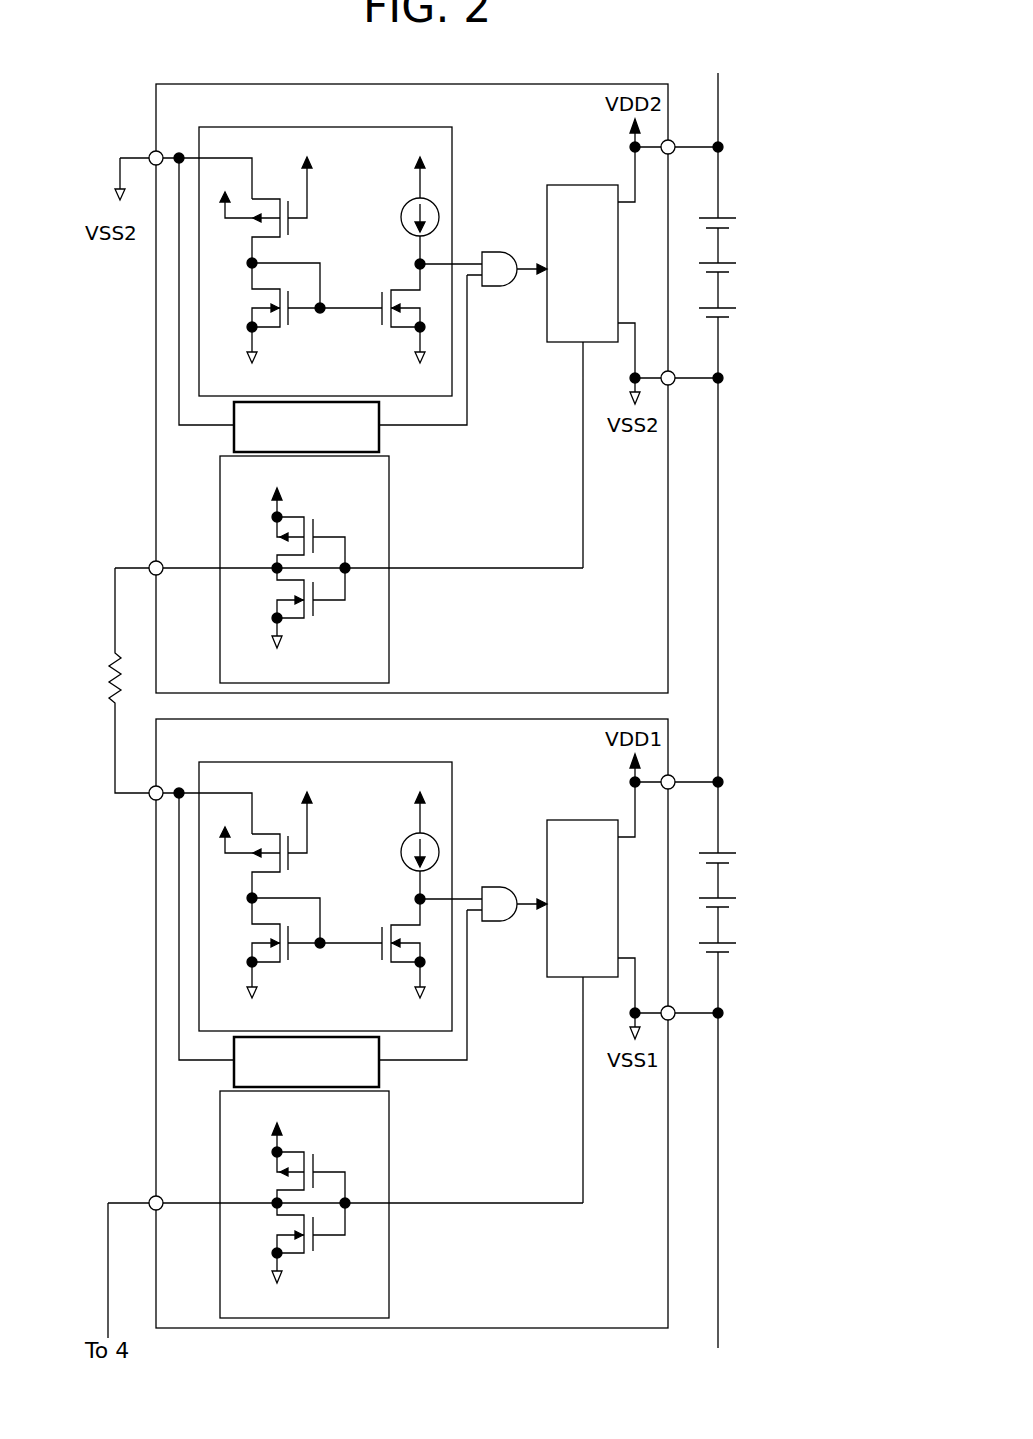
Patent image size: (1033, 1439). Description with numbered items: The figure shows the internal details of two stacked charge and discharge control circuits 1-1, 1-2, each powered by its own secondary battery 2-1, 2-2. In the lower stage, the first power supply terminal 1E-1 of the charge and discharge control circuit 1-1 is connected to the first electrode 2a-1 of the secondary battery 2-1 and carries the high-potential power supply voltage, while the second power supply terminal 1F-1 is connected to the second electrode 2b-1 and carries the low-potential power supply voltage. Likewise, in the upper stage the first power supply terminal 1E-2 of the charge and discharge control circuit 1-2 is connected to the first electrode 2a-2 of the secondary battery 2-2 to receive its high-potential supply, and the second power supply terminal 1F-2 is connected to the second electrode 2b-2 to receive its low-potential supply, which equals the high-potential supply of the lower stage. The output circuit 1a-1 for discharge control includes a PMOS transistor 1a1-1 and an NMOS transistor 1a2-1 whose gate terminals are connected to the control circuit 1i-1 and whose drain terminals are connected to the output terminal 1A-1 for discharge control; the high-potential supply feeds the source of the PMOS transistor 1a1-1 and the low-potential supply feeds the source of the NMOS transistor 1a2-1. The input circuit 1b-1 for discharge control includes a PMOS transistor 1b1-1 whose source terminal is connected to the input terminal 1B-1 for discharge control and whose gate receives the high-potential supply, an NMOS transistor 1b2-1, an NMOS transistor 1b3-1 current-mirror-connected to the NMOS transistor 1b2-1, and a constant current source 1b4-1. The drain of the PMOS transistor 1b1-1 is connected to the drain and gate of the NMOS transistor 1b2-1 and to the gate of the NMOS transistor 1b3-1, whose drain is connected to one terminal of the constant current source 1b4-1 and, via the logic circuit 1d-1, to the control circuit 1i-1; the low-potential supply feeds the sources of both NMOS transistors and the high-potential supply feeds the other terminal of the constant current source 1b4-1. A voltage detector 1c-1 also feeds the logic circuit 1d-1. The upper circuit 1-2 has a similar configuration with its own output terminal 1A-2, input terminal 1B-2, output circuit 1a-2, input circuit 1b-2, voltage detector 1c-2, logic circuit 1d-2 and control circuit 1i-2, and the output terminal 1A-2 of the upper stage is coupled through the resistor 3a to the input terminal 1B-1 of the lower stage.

The charge and discharge control circuit 1-1 is at (156, 985).
The charge and discharge control circuit 1-2 is at (156, 350).
The output terminal for discharge control 1A-1 is at (151, 1199).
The output terminal for discharge control 1A-2 is at (151, 564).
The input terminal for discharge control 1B-1 is at (152, 798).
The input terminal for discharge control 1B-2 is at (150, 153).
The first power supply terminal 1E-1 is at (673, 788).
The first power supply terminal 1E-2 is at (673, 153).
The second power supply terminal 1F-1 is at (668, 1007).
The second power supply terminal 1F-2 is at (668, 372).
The output circuit for discharge control 1a-1 is at (344, 1204).
The output circuit for discharge control 1a-2 is at (390, 648).
The PMOS transistor 1a1-1 is at (314, 1162).
The NMOS transistor 1a2-1 is at (314, 1246).
The input circuit for discharge control 1b-1 is at (367, 896).
The input circuit for discharge control 1b-2 is at (453, 148).
The PMOS transistor 1b1-1 is at (344, 876).
The NMOS transistor 1b2-1 is at (270, 966).
The NMOS transistor 1b3-1 is at (403, 982).
The constant current source 1b4-1 is at (404, 852).
The voltage detector 1c-1 is at (383, 1075).
The voltage detector 1c-2 is at (383, 440).
The logic circuit 1d-1 is at (505, 922).
The logic circuit 1d-2 is at (505, 287).
The control circuit 1i-1 is at (547, 853).
The control circuit 1i-2 is at (547, 218).
The secondary battery 2-1 is at (756, 906).
The secondary battery 2-2 is at (756, 271).
The first electrode 2a-1 is at (725, 852).
The first electrode 2a-2 is at (725, 217).
The second electrode 2b-1 is at (756, 974).
The second electrode 2b-2 is at (756, 339).
The resistor 3a is at (112, 680).